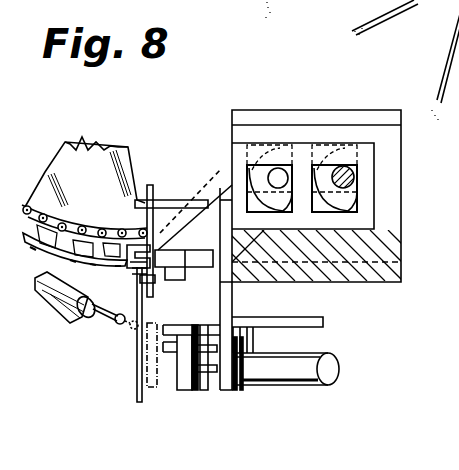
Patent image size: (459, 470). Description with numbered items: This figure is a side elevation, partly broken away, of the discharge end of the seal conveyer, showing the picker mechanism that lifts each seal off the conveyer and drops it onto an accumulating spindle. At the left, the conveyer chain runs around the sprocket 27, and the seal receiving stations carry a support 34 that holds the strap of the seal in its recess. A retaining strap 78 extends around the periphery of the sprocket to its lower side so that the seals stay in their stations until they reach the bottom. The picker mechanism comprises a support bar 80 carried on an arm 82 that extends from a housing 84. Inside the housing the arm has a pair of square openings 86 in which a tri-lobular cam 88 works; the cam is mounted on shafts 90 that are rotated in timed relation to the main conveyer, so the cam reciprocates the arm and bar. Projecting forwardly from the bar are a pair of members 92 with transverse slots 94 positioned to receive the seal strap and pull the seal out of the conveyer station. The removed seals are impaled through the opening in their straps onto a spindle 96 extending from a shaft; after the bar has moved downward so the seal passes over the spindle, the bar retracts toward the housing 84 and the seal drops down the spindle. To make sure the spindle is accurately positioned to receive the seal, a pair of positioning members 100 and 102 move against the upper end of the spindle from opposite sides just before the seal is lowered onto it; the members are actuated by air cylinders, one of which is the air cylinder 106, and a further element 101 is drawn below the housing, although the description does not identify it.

The sprocket 27 is at (68, 143).
The support 34 is at (92, 188).
The retaining strap 78 is at (43, 252).
The support bar 80 is at (353, 208).
The arm 82 is at (190, 228).
The housing 84 is at (388, 133).
The square opening 86 is at (233, 205).
The tri-lobular cam 88 is at (318, 178).
The shaft 90 is at (279, 177).
The member 92 is at (148, 283).
The transverse slot 94 is at (132, 268).
The spindle 96 is at (137, 373).
The positioning member 100 is at (243, 298).
The roller 101 is at (317, 352).
The positioning member 102 is at (117, 328).
The air cylinder 106 is at (63, 312).